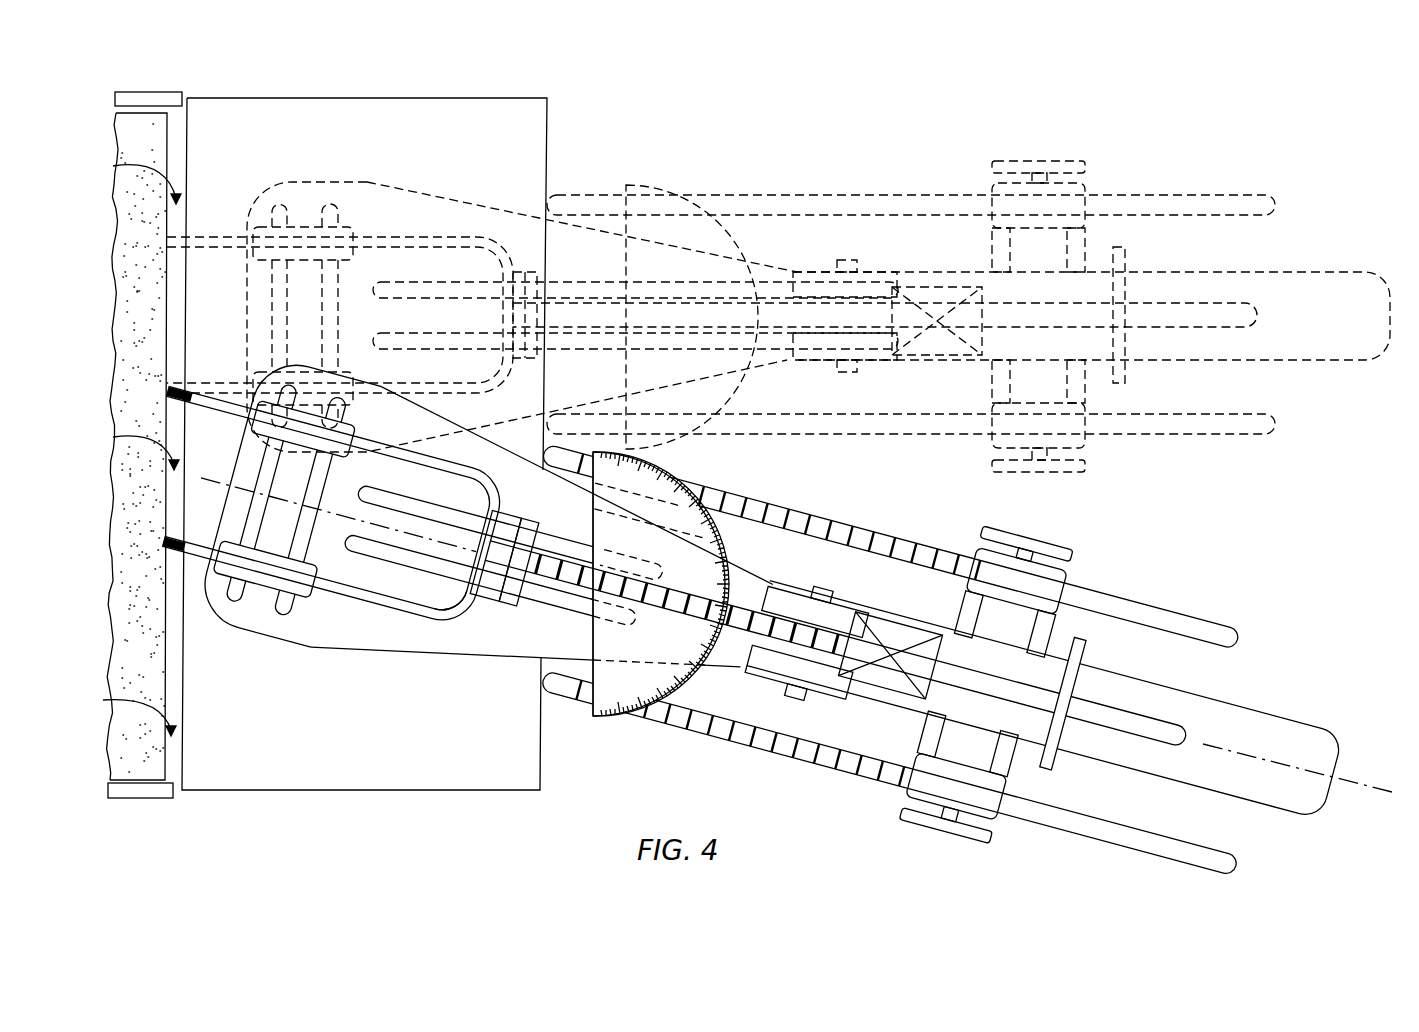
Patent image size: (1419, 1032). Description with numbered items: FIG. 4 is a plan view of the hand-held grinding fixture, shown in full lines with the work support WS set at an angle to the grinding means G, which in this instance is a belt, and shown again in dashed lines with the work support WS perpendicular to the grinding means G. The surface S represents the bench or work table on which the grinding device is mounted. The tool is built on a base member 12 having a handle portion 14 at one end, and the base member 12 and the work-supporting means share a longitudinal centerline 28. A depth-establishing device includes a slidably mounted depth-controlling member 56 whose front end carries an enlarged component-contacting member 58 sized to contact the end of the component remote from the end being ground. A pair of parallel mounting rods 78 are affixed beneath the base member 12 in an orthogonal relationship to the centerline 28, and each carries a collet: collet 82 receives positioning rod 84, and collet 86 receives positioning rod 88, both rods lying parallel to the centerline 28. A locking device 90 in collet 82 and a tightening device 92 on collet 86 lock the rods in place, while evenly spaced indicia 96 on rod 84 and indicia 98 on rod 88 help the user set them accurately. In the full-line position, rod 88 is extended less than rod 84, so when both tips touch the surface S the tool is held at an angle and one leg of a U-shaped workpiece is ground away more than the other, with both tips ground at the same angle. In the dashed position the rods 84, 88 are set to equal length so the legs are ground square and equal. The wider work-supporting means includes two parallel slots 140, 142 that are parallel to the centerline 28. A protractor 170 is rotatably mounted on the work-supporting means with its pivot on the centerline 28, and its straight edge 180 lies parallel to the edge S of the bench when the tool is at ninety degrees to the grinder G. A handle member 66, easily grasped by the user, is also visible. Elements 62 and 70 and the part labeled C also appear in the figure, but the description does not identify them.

The base member 12 is at (1174, 773).
The handle portion 14 is at (1303, 764).
The longitudinal centerline 28 is at (1366, 787).
The depth-controlling member 56 is at (670, 592).
The component-contacting member 58 is at (505, 527).
The clamp block 62 is at (873, 640).
The handle member 66 is at (1070, 682).
The tube bend 70 is at (460, 607).
The mounting rods 78 is at (1000, 763).
The collet 82 is at (1047, 580).
The positioning rod 84 is at (812, 527).
The collet 86 is at (910, 793).
The positioning rod 88 is at (648, 710).
The locking device 90 is at (1023, 540).
The tightening device 92 is at (955, 833).
The indicia 96 is at (888, 540).
The indicia 98 is at (748, 748).
The slot 140 is at (557, 550).
The slot 142 is at (570, 607).
The protractor 170 is at (703, 492).
The straight edge 180 is at (585, 675).
The clamp C is at (470, 495).
The grinding means G is at (163, 142).
The surface S is at (548, 138).
The work support WS is at (493, 637).